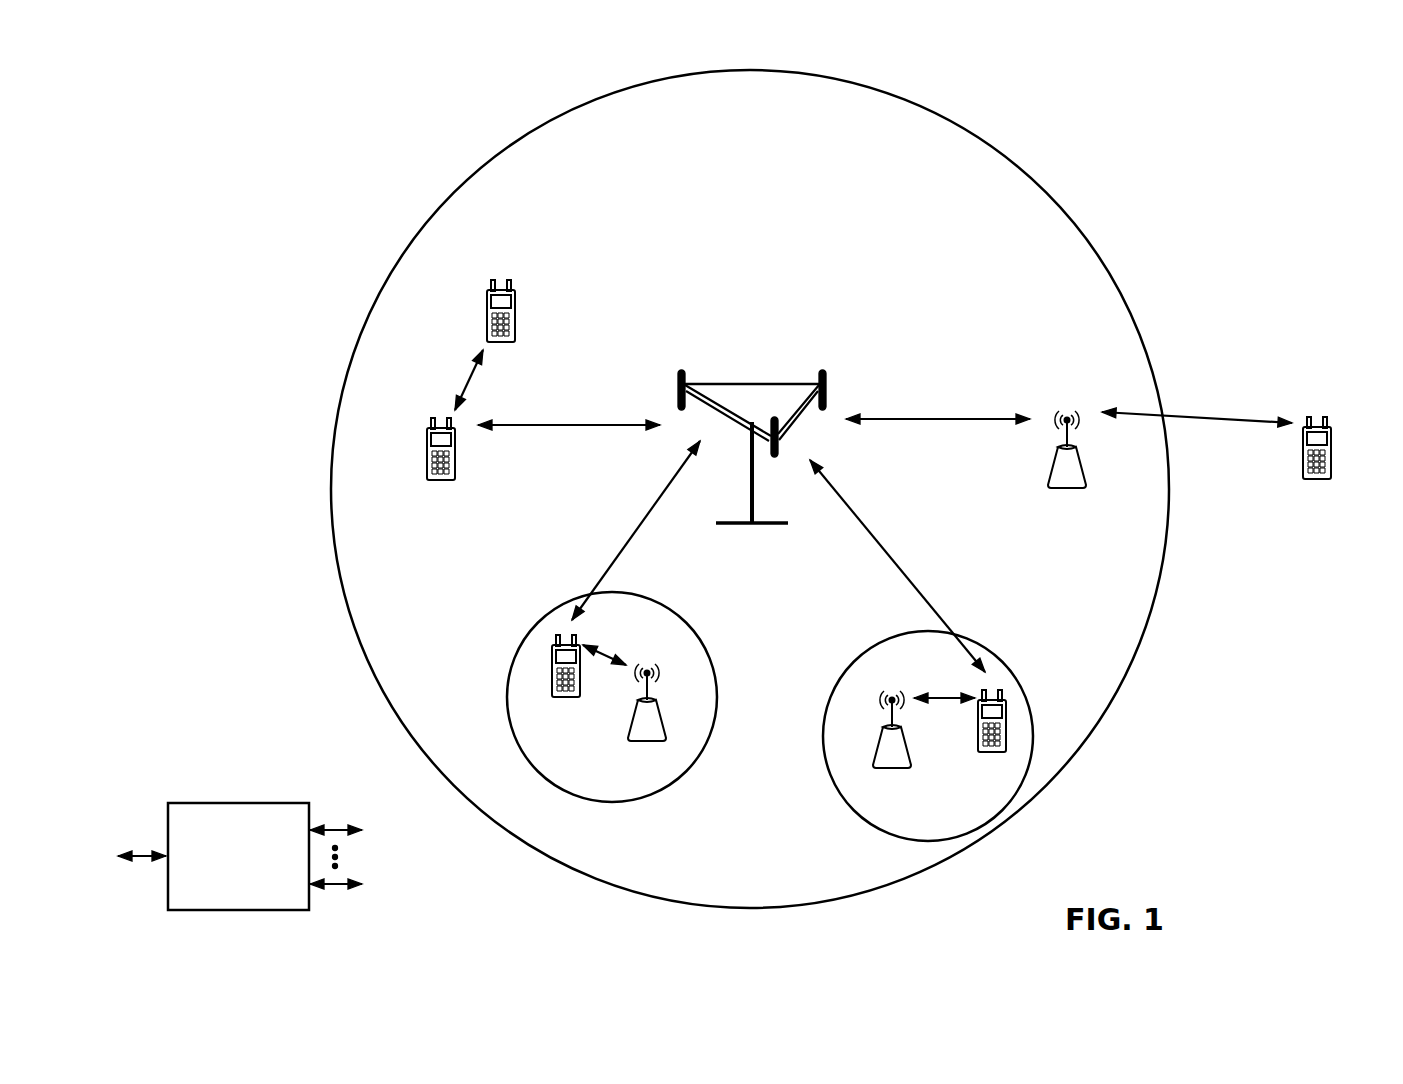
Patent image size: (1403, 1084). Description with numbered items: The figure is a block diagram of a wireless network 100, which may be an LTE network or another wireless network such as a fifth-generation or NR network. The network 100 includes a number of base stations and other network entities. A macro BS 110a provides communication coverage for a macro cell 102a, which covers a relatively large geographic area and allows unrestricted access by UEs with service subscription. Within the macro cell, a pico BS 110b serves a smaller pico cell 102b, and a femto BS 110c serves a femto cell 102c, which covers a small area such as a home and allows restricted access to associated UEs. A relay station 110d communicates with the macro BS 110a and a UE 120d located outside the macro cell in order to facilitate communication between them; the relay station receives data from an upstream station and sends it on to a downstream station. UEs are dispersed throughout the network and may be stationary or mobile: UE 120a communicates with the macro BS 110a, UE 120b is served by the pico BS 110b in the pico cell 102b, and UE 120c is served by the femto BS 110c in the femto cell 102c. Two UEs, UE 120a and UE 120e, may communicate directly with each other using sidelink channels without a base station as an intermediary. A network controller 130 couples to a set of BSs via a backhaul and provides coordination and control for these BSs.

The wireless network 100 is at (1222, 151).
The macro cell 102a is at (1030, 177).
The pico cell 102b is at (690, 626).
The femto cell 102c is at (848, 664).
The macro BS 110a is at (748, 384).
The pico BS 110b is at (662, 722).
The femto BS 110c is at (877, 748).
The relay station 110d is at (1067, 420).
The UE 120a is at (428, 438).
The UE 120b is at (552, 698).
The UE 120c is at (978, 744).
The UE 120d is at (1332, 436).
The UE 120e is at (487, 292).
The network controller 130 is at (235, 803).